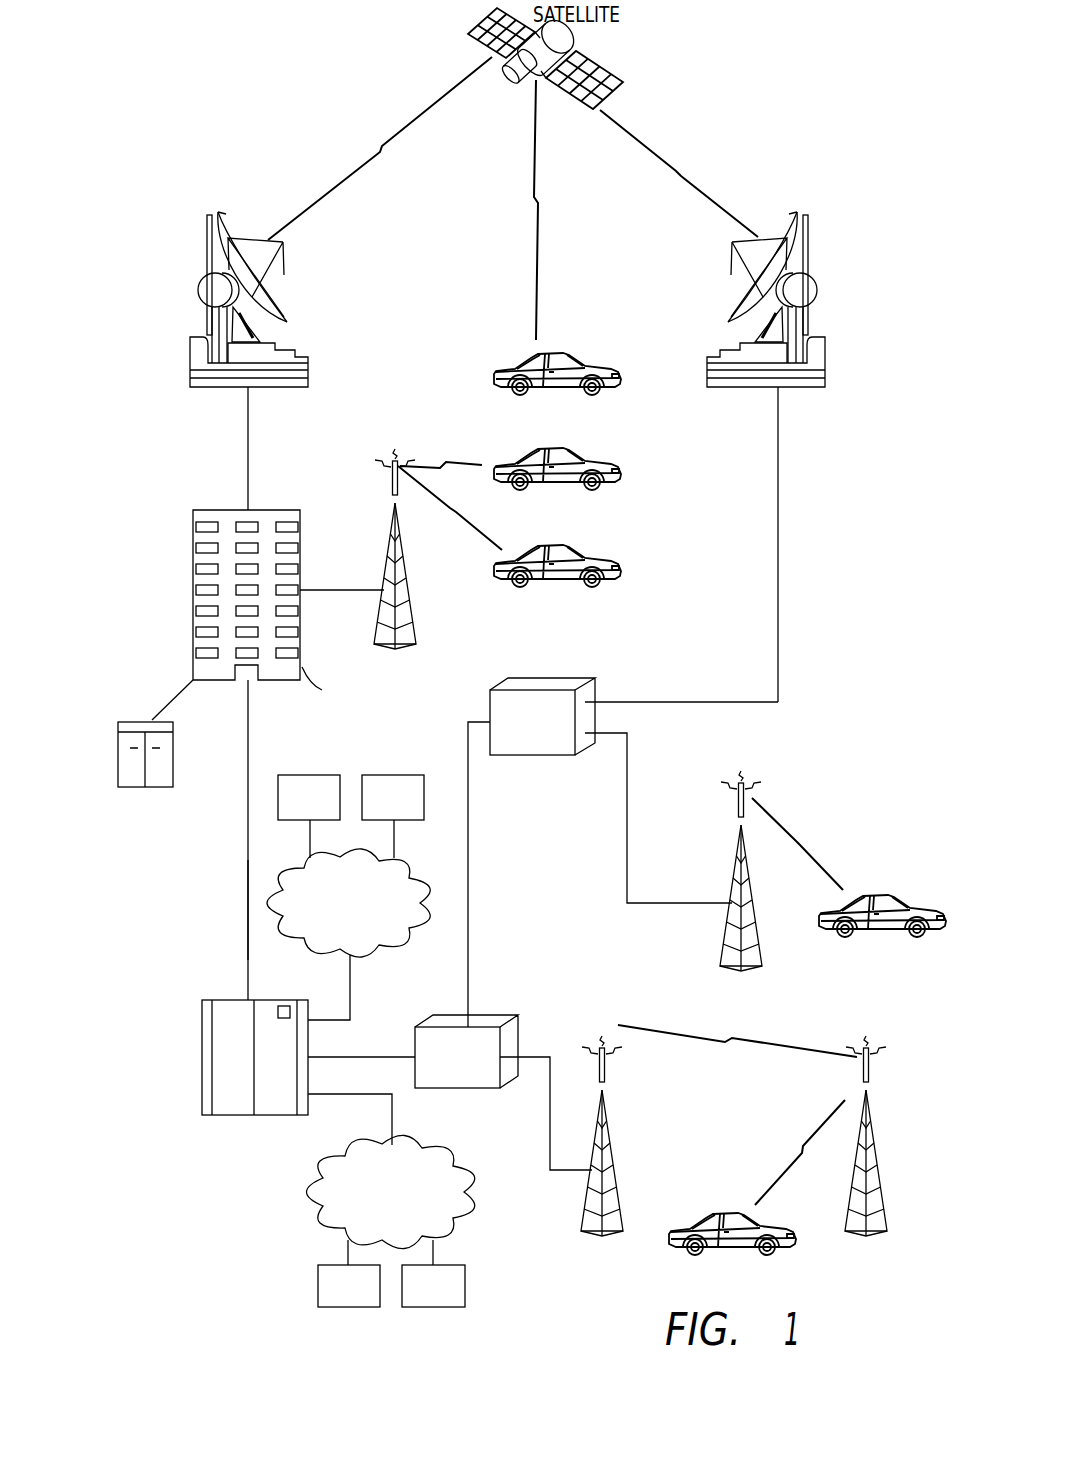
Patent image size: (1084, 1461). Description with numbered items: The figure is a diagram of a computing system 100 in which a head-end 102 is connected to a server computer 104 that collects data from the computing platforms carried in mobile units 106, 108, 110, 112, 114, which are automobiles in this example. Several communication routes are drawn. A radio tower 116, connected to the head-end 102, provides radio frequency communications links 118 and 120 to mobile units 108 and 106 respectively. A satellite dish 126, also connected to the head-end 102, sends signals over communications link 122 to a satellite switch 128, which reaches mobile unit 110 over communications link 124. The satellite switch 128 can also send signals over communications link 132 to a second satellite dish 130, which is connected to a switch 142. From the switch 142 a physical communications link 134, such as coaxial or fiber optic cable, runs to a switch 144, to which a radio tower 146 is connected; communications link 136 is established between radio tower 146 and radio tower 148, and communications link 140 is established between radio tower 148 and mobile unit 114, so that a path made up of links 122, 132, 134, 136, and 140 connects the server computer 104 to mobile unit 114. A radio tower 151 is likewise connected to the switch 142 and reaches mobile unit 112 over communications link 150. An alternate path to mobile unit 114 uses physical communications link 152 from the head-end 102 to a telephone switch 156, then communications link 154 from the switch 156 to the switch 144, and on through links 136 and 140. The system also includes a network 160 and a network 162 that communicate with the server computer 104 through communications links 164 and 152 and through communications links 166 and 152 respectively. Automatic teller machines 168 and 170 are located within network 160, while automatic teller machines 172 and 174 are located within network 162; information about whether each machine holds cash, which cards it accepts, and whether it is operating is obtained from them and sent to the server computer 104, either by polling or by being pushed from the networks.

The computing system 100 is at (356, 73).
The head-end 102 is at (192, 534).
The server computer 104 is at (140, 722).
The mobile unit 106 is at (550, 590).
The mobile unit 108 is at (592, 460).
The mobile unit 110 is at (594, 366).
The mobile unit 112 is at (890, 896).
The mobile unit 114 is at (716, 1214).
The radio tower 116 is at (386, 556).
The communications link 118 is at (455, 464).
The communications link 120 is at (458, 522).
The communications link 122 is at (365, 165).
The communications link 124 is at (534, 200).
The satellite dish 126 is at (210, 280).
The satellite switch 128 is at (509, 84).
The satellite dish 130 is at (820, 352).
The communications link 132 is at (660, 165).
The communications link 134 is at (470, 866).
The communications link 136 is at (731, 1030).
The communications link 140 is at (787, 1172).
The switch 142 is at (552, 757).
The switch 144 is at (482, 1022).
The radio tower 146 is at (586, 1192).
The radio tower 148 is at (884, 1180).
The communications link 150 is at (797, 836).
The radio tower 151 is at (723, 922).
The communications link 152 is at (246, 910).
The communications link 154 is at (375, 1056).
The switch 156 is at (201, 1062).
The network 160 is at (348, 903).
The network 162 is at (391, 1191).
The communications link 164 is at (353, 975).
The communications link 166 is at (393, 1115).
The automatic teller machine 168 is at (310, 774).
The automatic teller machine 170 is at (394, 774).
The automatic teller machine 172 is at (317, 1287).
The automatic teller machine 174 is at (466, 1287).